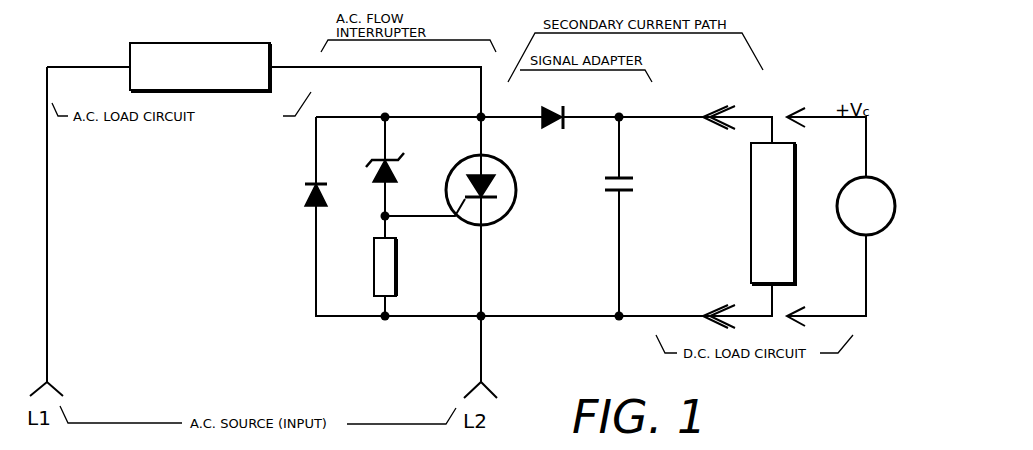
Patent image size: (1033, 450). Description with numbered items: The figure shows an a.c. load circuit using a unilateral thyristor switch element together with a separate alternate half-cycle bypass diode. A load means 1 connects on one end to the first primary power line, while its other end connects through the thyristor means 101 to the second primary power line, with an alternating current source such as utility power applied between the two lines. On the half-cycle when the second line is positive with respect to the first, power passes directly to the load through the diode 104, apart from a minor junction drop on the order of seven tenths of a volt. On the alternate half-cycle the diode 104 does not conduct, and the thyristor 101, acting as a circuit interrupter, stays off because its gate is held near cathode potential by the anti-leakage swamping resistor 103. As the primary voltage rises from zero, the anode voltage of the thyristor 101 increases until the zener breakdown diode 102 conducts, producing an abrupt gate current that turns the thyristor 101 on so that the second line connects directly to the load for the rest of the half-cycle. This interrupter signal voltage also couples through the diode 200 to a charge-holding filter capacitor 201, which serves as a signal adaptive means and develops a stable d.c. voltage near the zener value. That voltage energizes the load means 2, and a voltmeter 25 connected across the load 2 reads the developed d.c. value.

The load means 1 is at (210, 50).
The load means 2 is at (764, 242).
The voltmeter 25 is at (880, 214).
The thyristor means 101 is at (503, 208).
The zener breakdown diode 102 is at (398, 172).
The anti-leakage swamping resistor 103 is at (388, 278).
The diode 104 is at (301, 208).
The diode 200 is at (558, 105).
The filter capacitor 201 is at (613, 197).